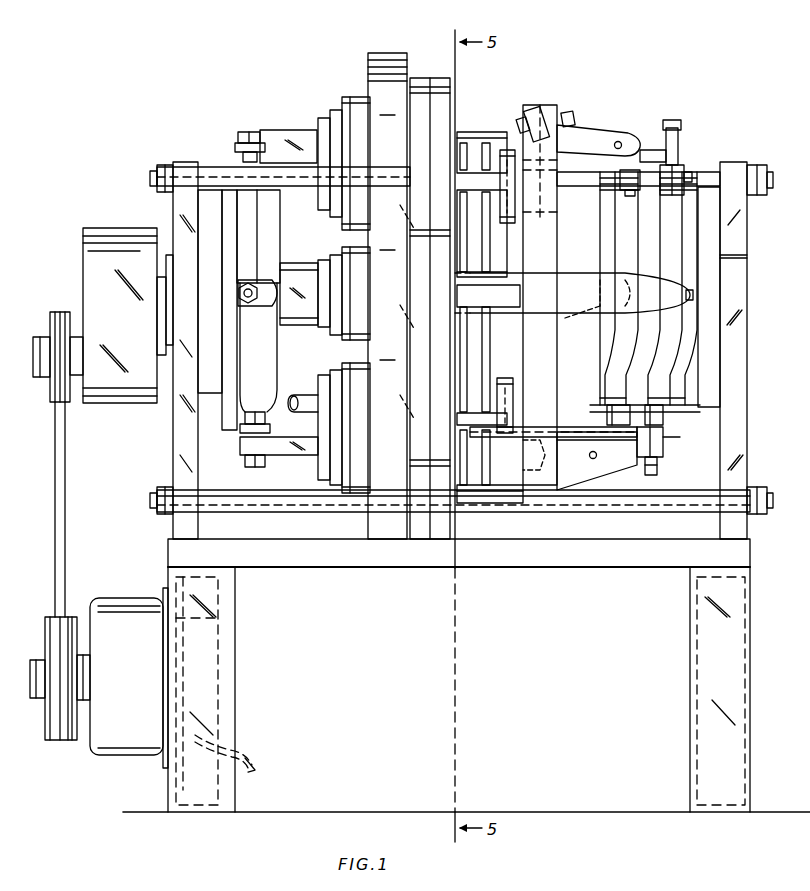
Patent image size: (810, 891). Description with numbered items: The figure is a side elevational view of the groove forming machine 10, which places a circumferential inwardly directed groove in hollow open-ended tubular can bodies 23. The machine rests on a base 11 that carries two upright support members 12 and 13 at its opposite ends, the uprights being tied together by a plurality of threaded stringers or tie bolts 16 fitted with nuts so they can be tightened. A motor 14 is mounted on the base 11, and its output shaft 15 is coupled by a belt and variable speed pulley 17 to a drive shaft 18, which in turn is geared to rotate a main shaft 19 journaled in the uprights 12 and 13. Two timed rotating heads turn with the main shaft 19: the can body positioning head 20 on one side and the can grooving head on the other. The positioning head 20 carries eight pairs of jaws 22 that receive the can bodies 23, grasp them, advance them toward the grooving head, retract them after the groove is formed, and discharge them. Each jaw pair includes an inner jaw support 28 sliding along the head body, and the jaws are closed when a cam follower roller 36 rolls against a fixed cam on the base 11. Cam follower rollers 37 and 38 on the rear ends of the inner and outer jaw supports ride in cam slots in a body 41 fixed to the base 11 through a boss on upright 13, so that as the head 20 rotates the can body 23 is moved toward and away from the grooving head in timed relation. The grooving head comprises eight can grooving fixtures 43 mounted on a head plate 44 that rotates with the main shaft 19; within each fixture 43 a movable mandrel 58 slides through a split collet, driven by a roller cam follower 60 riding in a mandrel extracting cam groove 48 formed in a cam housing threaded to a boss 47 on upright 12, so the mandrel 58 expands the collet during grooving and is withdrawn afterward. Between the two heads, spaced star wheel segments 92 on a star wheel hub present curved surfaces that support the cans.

The groove forming machine 10 is at (263, 94).
The base 11 is at (348, 560).
The upright support member 12 is at (180, 447).
The upright support member 13 is at (740, 452).
The motor 14 is at (130, 686).
The output shaft 15 is at (35, 692).
The tie bolts 16 is at (210, 167).
The belt and variable speed pulley 17 is at (66, 525).
The drive shaft 18 is at (35, 352).
The main shaft 19 is at (160, 298).
The can body positioning head 20 is at (701, 147).
The pairs of jaws 22 is at (592, 126).
The can bodies 23 is at (478, 140).
The inner jaw support 28 is at (573, 283).
The cam follower roller 36 is at (549, 110).
The cam follower roller 37 is at (630, 170).
The cam follower roller 38 is at (690, 176).
The body 41 is at (685, 252).
The can grooving fixtures 43 is at (334, 96).
The head plate 44 is at (437, 78).
The boss 47 is at (208, 216).
The mandrel extracting cam groove 48 is at (250, 355).
The movable mandrel 58 is at (290, 130).
The roller cam follower 60 is at (256, 165).
The star wheel segments 92 is at (467, 258).